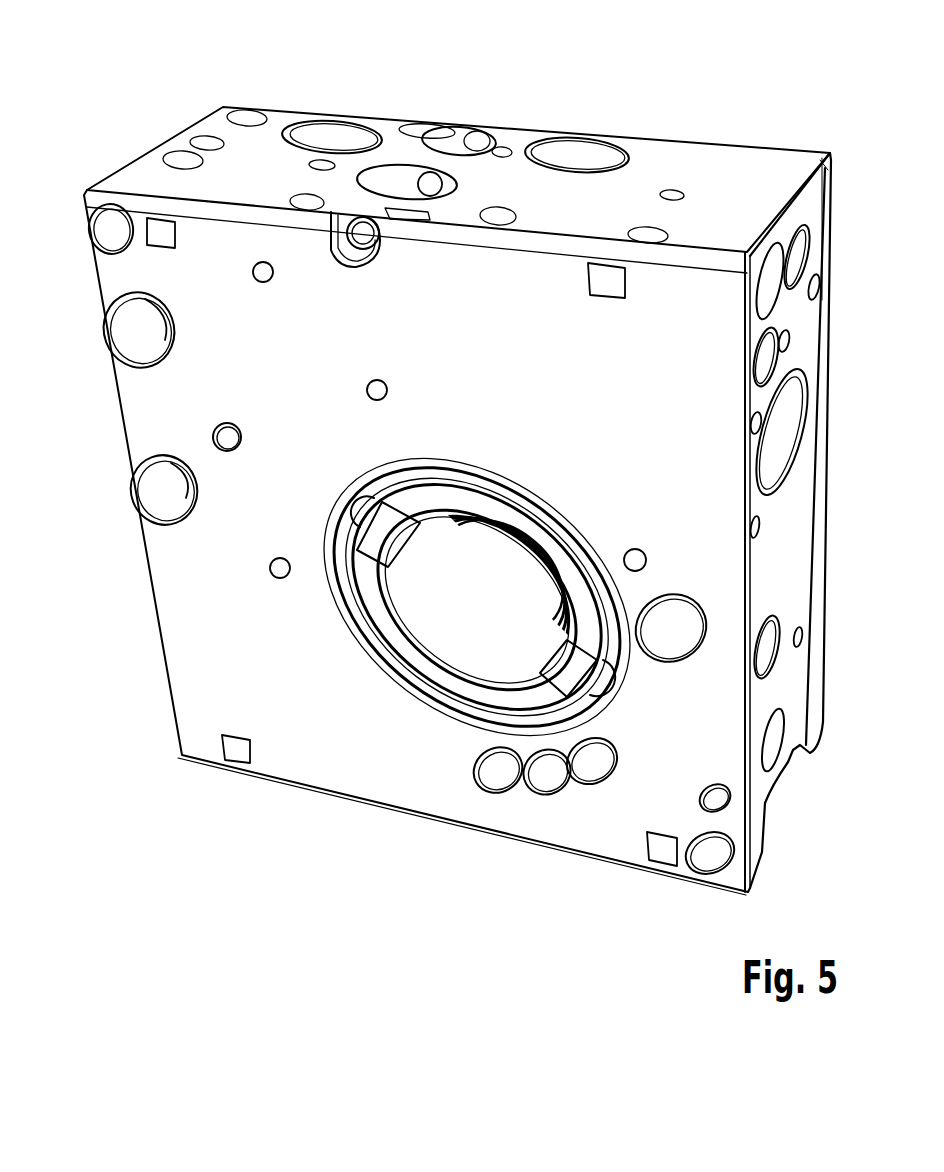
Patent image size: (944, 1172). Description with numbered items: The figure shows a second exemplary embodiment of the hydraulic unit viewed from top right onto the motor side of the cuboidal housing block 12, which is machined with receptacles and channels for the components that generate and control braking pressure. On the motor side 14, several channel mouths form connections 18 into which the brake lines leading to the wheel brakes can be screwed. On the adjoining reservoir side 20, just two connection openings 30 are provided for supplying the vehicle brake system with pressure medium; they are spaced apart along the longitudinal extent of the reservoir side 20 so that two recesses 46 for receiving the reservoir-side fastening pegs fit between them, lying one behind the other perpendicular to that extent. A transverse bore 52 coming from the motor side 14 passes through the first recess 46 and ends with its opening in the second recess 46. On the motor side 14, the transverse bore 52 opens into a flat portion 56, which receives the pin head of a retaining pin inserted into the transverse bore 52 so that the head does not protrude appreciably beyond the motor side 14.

The housing block 12 is at (535, 80).
The motor side 14 is at (677, 369).
The reservoir side 20 is at (740, 192).
The connections 18 is at (135, 340).
The connection openings 30 is at (335, 130).
The recesses 46 is at (393, 180).
The transverse bore 52 is at (428, 181).
The flat portion 56 is at (350, 226).